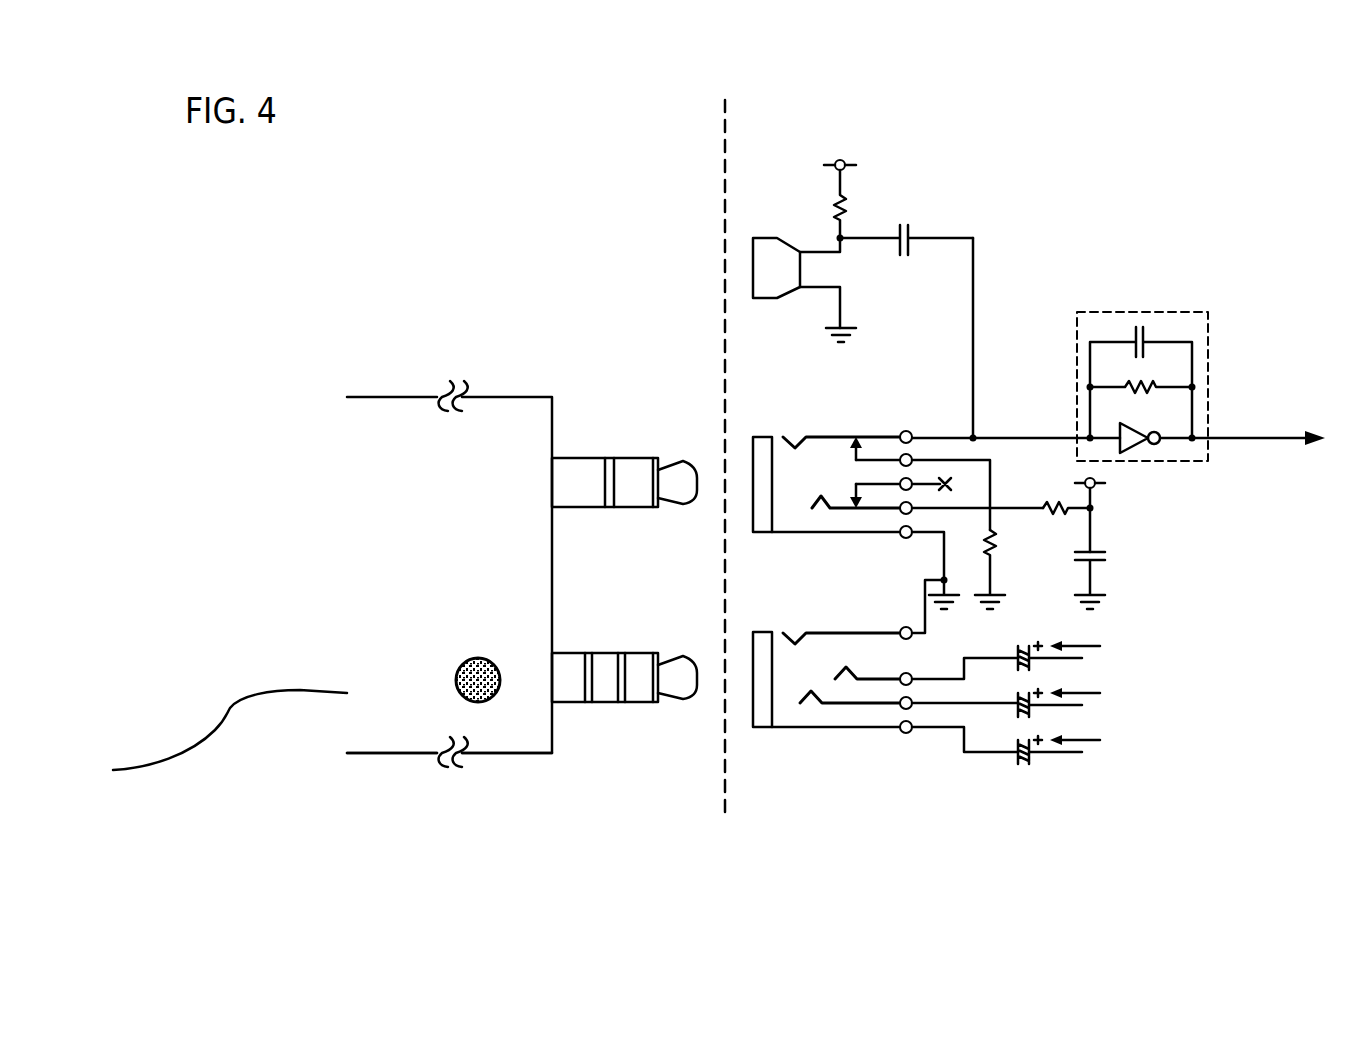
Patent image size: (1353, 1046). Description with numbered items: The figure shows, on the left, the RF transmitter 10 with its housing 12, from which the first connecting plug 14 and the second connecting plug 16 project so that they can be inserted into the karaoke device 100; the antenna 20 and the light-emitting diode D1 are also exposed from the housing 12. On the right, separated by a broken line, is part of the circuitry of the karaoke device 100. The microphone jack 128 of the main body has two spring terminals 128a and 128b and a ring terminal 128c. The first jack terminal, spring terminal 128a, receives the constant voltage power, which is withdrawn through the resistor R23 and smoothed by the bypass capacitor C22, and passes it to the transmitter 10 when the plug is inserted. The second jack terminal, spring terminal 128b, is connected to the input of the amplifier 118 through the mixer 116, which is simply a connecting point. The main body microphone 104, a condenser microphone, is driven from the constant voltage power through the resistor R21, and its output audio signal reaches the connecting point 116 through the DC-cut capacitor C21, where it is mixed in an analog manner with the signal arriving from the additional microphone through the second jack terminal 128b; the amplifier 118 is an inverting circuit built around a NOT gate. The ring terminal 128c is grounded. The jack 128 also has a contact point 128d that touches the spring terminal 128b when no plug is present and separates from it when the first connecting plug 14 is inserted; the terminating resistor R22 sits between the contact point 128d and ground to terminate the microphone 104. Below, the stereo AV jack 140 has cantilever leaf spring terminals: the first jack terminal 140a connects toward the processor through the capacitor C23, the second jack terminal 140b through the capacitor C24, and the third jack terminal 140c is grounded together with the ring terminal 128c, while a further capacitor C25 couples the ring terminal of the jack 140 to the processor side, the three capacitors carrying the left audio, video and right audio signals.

The RF transmitter 10 is at (401, 360).
The housing 12 is at (483, 755).
The first connecting plug 14 is at (618, 460).
The second connecting plug 16 is at (603, 656).
The antenna 20 is at (286, 690).
The light-emitting diode D1 is at (478, 702).
The karaoke device 100 is at (1034, 159).
The main body microphone 104 is at (770, 300).
The mixer 116 is at (976, 430).
The amplifier 118 is at (1152, 312).
The microphone jack 128 is at (791, 416).
The spring terminal 128a is at (840, 510).
The spring terminal 128b is at (826, 437).
The ring terminal 128c is at (760, 533).
The contact point 128d is at (885, 460).
The jack 140 is at (742, 615).
The first jack terminal 140a is at (870, 682).
The second jack terminal 140b is at (838, 706).
The third jack terminal 140c is at (885, 612).
The resistor R21 is at (850, 205).
The terminating resistor R22 is at (996, 550).
The resistor R23 is at (1052, 506).
The DC-cut capacitor C21 is at (910, 228).
The bypass capacitor C22 is at (1100, 563).
The capacitor C23 is at (1016, 654).
The capacitor C24 is at (1016, 701).
The capacitor C25 is at (1032, 762).